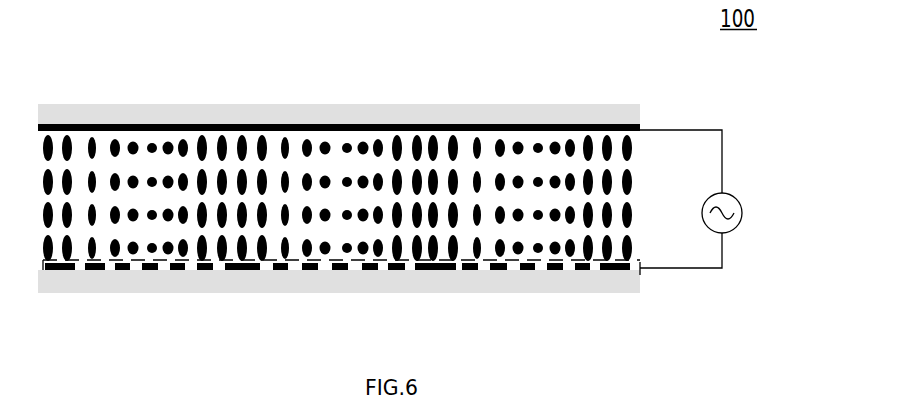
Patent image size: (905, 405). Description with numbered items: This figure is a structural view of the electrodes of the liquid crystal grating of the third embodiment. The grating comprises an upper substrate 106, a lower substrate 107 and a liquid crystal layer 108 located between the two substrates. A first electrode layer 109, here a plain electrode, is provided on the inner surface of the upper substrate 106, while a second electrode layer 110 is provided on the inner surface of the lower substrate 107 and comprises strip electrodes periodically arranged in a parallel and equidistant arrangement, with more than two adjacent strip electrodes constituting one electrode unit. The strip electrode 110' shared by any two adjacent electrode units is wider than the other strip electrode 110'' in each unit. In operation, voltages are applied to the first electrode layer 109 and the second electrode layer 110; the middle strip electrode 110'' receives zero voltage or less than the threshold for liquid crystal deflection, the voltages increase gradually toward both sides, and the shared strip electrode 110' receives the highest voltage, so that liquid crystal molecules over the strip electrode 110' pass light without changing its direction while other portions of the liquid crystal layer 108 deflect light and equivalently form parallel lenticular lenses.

The upper substrate 106 is at (242, 118).
The lower substrate 107 is at (230, 285).
The liquid crystal layer 108 is at (588, 214).
The first electrode layer 109 is at (403, 127).
The second electrode layer 110 is at (388, 303).
The strip electrode shared by adjacent electrode units 110' is at (337, 301).
The other strip electrode 110'' is at (340, 309).